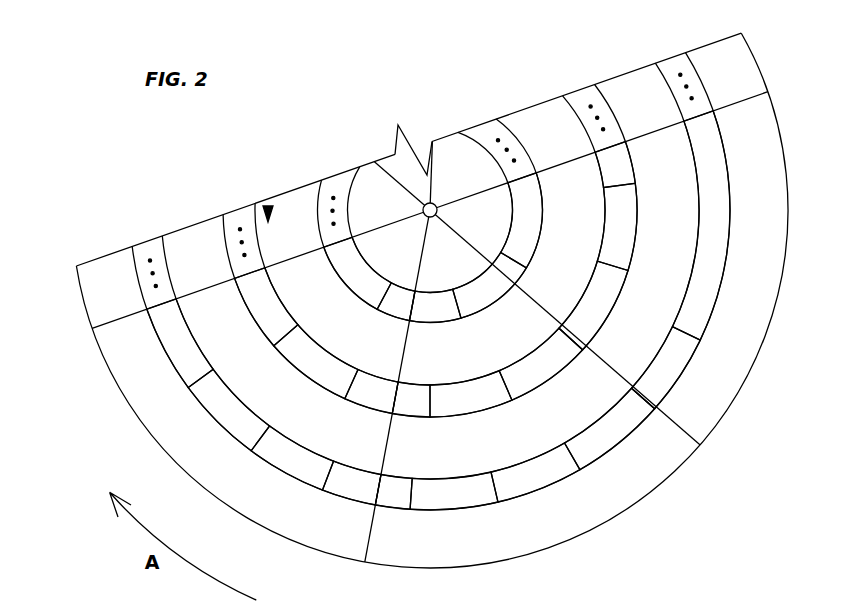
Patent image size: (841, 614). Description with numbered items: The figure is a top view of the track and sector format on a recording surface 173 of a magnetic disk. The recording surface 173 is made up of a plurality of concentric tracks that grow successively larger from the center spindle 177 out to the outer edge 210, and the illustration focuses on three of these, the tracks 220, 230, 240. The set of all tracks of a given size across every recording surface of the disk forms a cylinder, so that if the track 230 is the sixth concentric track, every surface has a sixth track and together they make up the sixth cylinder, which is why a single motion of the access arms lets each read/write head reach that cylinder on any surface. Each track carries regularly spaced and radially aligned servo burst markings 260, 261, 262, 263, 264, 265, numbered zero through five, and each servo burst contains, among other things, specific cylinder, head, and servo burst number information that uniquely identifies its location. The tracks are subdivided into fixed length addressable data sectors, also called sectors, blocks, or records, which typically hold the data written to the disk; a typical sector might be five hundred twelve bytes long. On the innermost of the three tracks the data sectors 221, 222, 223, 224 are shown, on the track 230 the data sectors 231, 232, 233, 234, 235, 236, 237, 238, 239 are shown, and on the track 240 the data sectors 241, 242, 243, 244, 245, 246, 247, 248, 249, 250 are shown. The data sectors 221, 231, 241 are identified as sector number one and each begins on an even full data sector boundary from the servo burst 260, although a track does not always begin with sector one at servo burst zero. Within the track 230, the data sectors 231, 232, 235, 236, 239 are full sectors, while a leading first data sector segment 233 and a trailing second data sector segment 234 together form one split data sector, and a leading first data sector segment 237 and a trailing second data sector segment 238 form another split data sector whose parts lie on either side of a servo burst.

The recording surface 173 is at (268, 205).
The center spindle 177 is at (421, 210).
The outer edge 210 is at (766, 340).
The track 220 is at (543, 190).
The data sector 221 is at (342, 283).
The data sector 222 is at (388, 314).
The data sector 223 is at (430, 324).
The data sector 224 is at (497, 301).
The track 230 is at (615, 112).
The data sector 231 is at (258, 331).
The data sector 232 is at (297, 372).
The first data sector segment 233 is at (369, 409).
The second data sector segment 234 is at (405, 420).
The data sector 235 is at (477, 412).
The data sector 236 is at (545, 386).
The first data sector segment 237 is at (584, 352).
The second data sector segment 238 is at (611, 314).
The data sector 239 is at (639, 203).
The track 240 is at (731, 211).
The data sector 241 is at (157, 337).
The data sector 242 is at (221, 433).
The data sector 243 is at (272, 473).
The data sector 244 is at (343, 502).
The data sector 245 is at (388, 512).
The data sector 246 is at (452, 513).
The data sector 247 is at (537, 497).
The data sector 248 is at (602, 460).
The data sector 249 is at (658, 413).
The data sector 250 is at (682, 375).
The servo burst marking 260 is at (200, 288).
The servo burst marking 261 is at (360, 561).
The servo burst marking 262 is at (700, 430).
The servo burst marking 263 is at (743, 106).
The servo burst marking 264 is at (440, 148).
The servo burst marking 265 is at (392, 174).